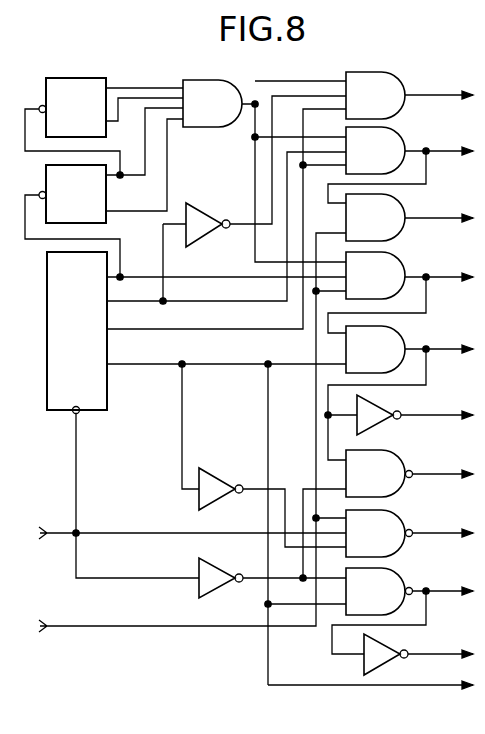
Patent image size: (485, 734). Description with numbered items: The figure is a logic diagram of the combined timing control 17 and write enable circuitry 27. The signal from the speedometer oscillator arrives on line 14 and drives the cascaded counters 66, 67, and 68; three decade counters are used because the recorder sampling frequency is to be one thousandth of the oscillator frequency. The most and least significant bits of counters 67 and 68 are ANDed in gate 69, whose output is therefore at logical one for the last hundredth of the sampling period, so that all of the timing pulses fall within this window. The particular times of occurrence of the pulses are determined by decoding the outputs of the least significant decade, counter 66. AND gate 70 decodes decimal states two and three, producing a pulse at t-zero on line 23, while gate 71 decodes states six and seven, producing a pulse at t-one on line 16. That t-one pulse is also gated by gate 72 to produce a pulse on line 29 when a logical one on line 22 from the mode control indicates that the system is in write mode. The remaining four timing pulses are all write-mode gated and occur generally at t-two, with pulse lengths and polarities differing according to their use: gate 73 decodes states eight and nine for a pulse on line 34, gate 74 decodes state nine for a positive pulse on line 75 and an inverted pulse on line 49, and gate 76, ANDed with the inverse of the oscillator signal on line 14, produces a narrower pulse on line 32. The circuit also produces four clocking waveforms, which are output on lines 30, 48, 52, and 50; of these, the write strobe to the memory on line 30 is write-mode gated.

The counter 68 is at (105, 79).
The counter 67 is at (108, 192).
The counter 66 is at (108, 350).
The AND gate 69 is at (206, 80).
The AND gate 70 is at (402, 82).
The gate 71 is at (401, 141).
The gate 72 is at (404, 212).
The gate 73 is at (401, 265).
The gate 74 is at (404, 347).
The gate 76 is at (403, 463).
The line 23 is at (444, 96).
The line 16 is at (445, 152).
The line 29 is at (445, 219).
The line 34 is at (445, 278).
The line 75 is at (457, 350).
The line 49 is at (447, 414).
The line 32 is at (455, 475).
The line 30 is at (452, 532).
The line 48 is at (458, 591).
The line 52 is at (458, 653).
The line 50 is at (450, 684).
The line 14 is at (62, 530).
The line 22 is at (108, 626).
The timing control 17 is at (155, 471).
The write enable circuitry 27 is at (140, 460).